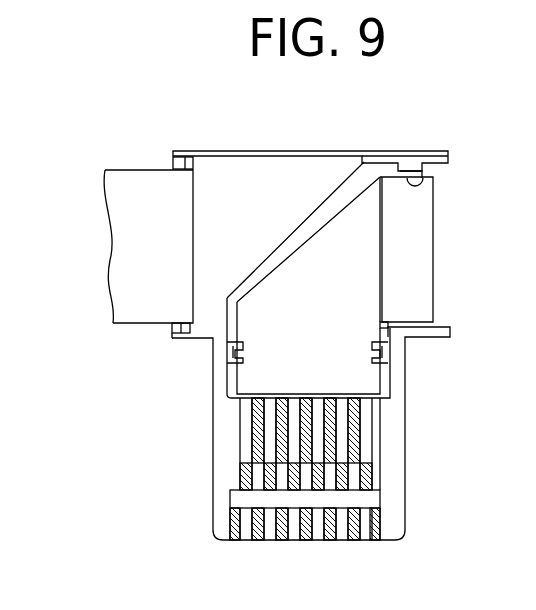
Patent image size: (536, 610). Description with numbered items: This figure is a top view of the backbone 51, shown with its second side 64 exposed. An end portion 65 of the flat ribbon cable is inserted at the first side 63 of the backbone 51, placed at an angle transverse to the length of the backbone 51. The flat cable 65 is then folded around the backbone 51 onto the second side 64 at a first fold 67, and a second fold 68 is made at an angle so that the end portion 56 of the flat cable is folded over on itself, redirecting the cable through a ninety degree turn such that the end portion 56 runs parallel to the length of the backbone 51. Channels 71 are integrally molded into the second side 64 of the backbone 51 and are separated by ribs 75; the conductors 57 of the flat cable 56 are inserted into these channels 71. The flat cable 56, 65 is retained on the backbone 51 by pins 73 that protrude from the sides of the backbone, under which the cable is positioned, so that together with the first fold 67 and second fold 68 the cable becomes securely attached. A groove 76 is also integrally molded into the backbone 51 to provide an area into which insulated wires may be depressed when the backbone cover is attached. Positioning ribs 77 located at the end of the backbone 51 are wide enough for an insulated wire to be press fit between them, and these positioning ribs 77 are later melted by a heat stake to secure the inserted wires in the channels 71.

The backbone 51 is at (405, 383).
The end portion of the flat cable 56 is at (345, 337).
The conductors 57 is at (244, 425).
The first side 63 is at (172, 166).
The second side 64 is at (313, 178).
The end portion of the flat ribbon cable 65 is at (138, 297).
The first fold 67 is at (437, 218).
The second fold 68 is at (331, 220).
The channels 71 is at (373, 456).
The pins 73 is at (420, 186).
The ribs 75 is at (355, 425).
The groove 76 is at (368, 500).
The positioning ribs 77 is at (352, 542).